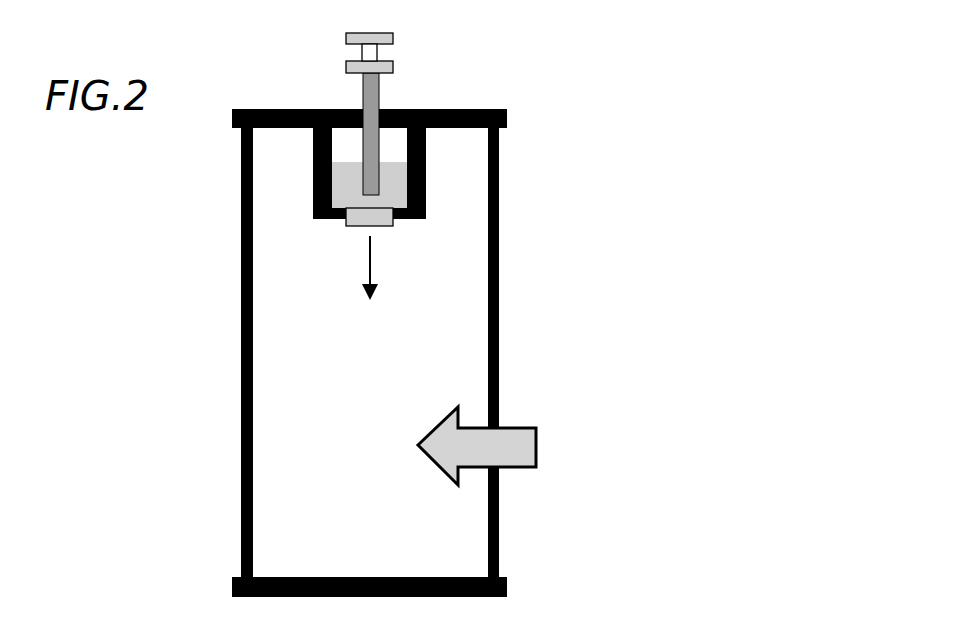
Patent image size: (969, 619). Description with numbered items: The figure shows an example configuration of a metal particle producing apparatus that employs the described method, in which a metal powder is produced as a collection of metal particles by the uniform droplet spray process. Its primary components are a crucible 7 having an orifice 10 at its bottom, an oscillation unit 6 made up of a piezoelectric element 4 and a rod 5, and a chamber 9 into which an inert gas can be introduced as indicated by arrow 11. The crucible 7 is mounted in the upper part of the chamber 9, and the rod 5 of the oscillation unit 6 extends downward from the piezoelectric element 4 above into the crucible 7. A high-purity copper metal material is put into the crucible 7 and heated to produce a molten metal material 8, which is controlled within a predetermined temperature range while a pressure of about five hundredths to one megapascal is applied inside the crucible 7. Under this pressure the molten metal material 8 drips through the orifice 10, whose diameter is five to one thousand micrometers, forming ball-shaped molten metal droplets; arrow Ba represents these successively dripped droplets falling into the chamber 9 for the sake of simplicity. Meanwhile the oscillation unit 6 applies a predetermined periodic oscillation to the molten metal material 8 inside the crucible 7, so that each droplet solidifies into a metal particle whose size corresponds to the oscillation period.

The piezoelectric element 4 is at (372, 53).
The rod 5 is at (380, 97).
The oscillation unit 6 is at (540, 0).
The crucible 7 is at (313, 187).
The molten metal material 8 is at (393, 187).
The chamber 9 is at (312, 367).
The orifice 10 is at (393, 225).
The arrow indicating introduction of inert gas 11 is at (515, 442).
The arrow representing dripped molten metal droplets Ba is at (367, 263).